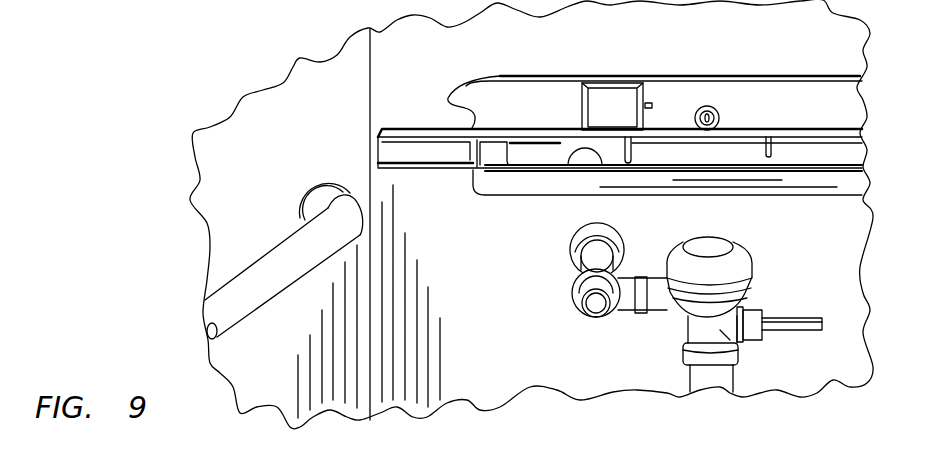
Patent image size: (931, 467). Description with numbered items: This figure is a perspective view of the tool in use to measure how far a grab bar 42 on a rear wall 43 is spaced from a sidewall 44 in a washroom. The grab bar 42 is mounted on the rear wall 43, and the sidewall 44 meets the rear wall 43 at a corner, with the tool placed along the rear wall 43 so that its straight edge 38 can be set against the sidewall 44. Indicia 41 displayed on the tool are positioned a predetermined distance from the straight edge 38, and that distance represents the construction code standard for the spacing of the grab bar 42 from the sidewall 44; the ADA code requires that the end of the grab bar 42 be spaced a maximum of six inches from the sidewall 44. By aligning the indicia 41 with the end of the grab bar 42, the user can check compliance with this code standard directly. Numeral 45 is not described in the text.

The straight edge 38 is at (353, 62).
The indicia 41 is at (450, 167).
The grab bar 42 is at (772, 197).
The rear wall 43 is at (704, 40).
The sidewall 44 is at (298, 145).
The support rod 45 is at (268, 252).